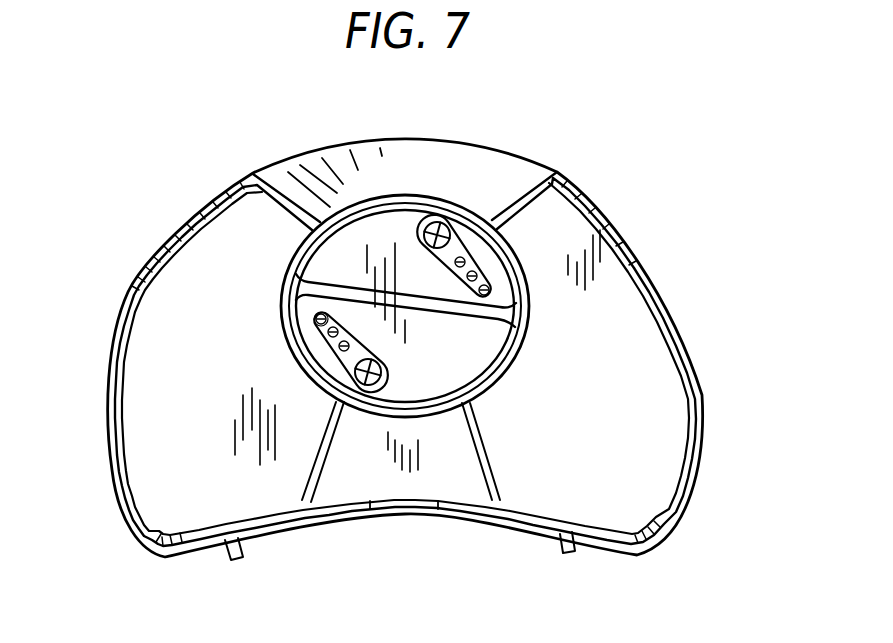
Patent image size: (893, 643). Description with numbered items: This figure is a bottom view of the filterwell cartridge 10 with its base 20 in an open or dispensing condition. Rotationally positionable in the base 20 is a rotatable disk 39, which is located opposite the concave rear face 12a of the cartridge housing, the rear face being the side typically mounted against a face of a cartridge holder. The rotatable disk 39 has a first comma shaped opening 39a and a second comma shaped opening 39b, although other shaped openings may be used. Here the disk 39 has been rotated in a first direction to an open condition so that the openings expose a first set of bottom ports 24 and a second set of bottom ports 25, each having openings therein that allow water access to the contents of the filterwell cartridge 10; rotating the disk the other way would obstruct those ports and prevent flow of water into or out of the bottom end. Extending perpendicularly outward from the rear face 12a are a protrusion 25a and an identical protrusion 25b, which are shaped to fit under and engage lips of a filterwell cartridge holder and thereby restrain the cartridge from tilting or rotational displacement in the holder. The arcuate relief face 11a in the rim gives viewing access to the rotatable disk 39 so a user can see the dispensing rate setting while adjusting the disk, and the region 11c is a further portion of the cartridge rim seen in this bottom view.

The filterwell cartridge 10 is at (668, 194).
The arcuate relief face 11a is at (287, 183).
The lower panel portion 11c is at (230, 497).
The concave rear face 12a is at (462, 517).
The base 20 is at (632, 423).
The first set of bottom ports 24 is at (313, 330).
The second set of bottom ports 25 is at (460, 233).
The protrusion 25a is at (227, 563).
The protrusion 25b is at (562, 550).
The rotatable disk 39 is at (416, 205).
The first comma shaped opening 39a is at (325, 350).
The second comma shaped opening 39b is at (477, 252).